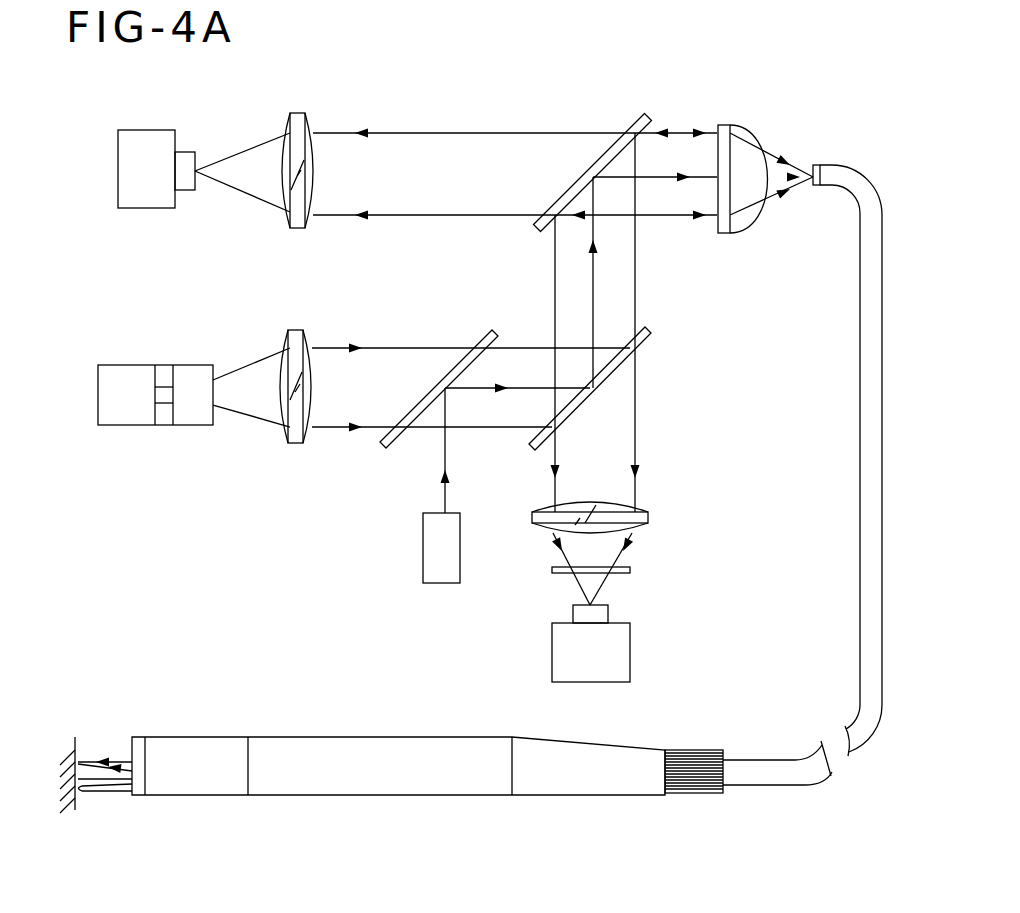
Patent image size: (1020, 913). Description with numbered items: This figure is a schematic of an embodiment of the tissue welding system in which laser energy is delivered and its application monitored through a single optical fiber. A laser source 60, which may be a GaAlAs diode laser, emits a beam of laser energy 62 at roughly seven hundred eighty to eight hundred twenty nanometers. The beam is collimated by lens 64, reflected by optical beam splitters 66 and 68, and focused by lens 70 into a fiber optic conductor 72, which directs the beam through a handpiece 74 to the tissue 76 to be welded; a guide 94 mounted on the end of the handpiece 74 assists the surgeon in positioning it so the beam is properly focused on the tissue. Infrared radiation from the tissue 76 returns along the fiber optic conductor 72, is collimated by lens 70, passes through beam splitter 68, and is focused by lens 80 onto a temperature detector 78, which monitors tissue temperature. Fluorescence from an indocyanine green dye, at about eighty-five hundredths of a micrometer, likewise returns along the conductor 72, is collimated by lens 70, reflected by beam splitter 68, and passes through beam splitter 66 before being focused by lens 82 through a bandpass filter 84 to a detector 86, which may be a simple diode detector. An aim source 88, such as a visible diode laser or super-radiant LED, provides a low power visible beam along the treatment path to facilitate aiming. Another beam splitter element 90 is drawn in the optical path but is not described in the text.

The laser source 60 is at (98, 392).
The beam of laser energy 62 is at (253, 405).
The lens 64 is at (298, 330).
The optical beam splitter 66 is at (650, 340).
The optical beam splitter 68 is at (641, 117).
The lens 70 is at (738, 233).
The fiber optic conductor 72 is at (862, 309).
The handpiece 74 is at (345, 738).
The tissue 76 is at (62, 753).
The temperature detector 78 is at (118, 168).
The lens 80 is at (300, 112).
The lens 82 is at (650, 515).
The filter 84 is at (630, 570).
The detector 86 is at (625, 660).
The aim source 88 is at (428, 538).
The beam splitter 90 is at (488, 335).
The guide 94 is at (100, 795).